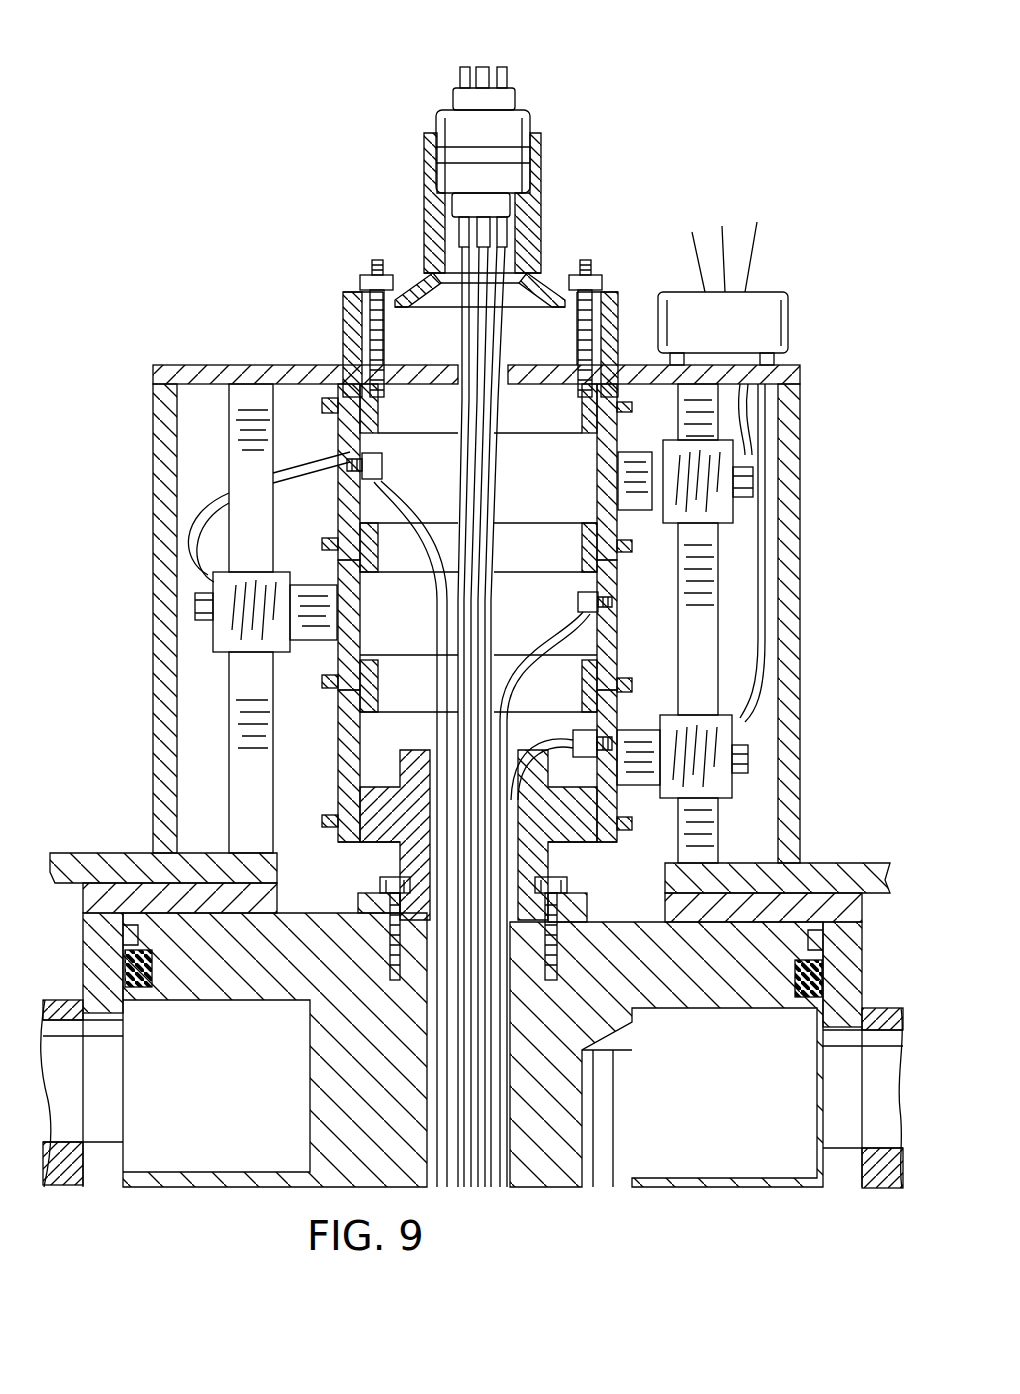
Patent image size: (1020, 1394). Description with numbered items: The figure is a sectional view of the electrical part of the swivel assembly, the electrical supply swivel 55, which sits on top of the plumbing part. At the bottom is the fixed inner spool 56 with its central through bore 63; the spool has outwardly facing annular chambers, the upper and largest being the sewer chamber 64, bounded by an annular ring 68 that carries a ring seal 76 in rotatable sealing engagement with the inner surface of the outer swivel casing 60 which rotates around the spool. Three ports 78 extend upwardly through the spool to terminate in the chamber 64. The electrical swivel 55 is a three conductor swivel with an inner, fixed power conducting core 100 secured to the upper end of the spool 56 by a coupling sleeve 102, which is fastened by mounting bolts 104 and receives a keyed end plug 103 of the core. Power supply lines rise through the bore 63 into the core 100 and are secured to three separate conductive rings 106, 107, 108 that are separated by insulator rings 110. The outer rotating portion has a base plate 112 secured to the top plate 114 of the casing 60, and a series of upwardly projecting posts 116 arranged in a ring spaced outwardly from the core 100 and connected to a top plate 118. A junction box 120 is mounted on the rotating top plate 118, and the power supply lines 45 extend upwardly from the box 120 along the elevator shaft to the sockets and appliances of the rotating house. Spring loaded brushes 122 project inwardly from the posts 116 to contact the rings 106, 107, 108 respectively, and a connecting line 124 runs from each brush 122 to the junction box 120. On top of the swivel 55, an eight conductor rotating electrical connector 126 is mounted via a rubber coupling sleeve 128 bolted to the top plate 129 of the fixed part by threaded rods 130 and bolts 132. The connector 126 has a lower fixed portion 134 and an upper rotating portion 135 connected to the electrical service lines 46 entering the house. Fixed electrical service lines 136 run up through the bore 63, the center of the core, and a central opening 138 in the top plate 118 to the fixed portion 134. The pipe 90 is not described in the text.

The power supply lines 45 is at (750, 224).
The electrical service lines 46 is at (503, 66).
The electrical supply swivel 55 is at (806, 511).
The fixed inner spool 56 is at (313, 1100).
The outer swivel casing 60 is at (95, 955).
The central through bore 63 is at (427, 1147).
The annular chamber 64 is at (753, 1131).
The annular ring 68 is at (710, 992).
The ring seals 76 is at (165, 996).
The ports 78 is at (620, 1180).
The pipe 90 is at (60, 1163).
The power conducting core 100 is at (637, 583).
The coupling sleeve 102 is at (566, 891).
The end plug 103 is at (360, 782).
The mounting bolts 104 is at (378, 885).
The conductive ring 106 is at (603, 450).
The conductive ring 107 is at (353, 612).
The conductive ring 108 is at (348, 752).
The insulator rings 110 is at (331, 408).
The base plate 112 is at (770, 863).
The top plate 114 is at (855, 908).
The posts 116 is at (237, 712).
The top plate 118 is at (790, 378).
The junction box 120 is at (775, 301).
The spring loaded brushes 122 is at (625, 483).
The connecting line 124 is at (207, 503).
The rotating electrical connector 126 is at (538, 98).
The rubber coupling sleeve 128 is at (612, 292).
The top plate 129 is at (418, 386).
The threaded rods 130 is at (373, 328).
The bolts 132 is at (370, 262).
The lower fixed portion 134 is at (514, 176).
The upper rotating portion 135 is at (452, 93).
The fixed electrical service lines 136 is at (489, 430).
The central opening 138 is at (462, 373).